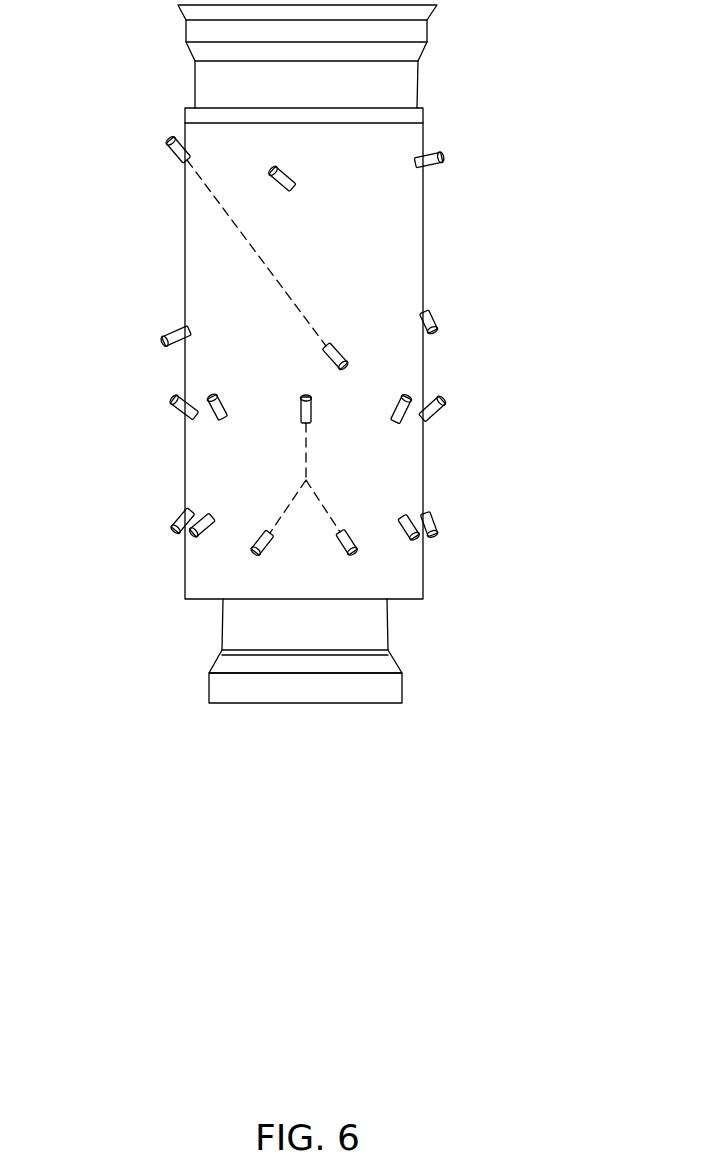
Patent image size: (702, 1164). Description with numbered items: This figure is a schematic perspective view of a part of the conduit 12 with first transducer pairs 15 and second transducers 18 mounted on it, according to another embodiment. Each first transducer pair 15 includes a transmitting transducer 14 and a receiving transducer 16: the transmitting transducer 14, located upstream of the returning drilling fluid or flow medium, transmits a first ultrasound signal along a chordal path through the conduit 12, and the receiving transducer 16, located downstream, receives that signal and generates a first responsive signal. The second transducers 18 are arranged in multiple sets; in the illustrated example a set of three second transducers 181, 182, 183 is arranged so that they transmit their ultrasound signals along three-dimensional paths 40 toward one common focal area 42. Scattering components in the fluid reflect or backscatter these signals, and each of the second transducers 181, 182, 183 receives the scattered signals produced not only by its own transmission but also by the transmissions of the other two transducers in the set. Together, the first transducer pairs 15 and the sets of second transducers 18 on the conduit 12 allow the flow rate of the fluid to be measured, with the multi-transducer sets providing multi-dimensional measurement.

The conduit 12 is at (408, 232).
The transmitting transducer 14 is at (347, 368).
The first transducer pair 15 is at (178, 128).
The receiving transducer 16 is at (170, 140).
The second transducers 18 is at (434, 524).
The second transducer 181 is at (300, 400).
The second transducer 182 is at (350, 553).
The second transducer 183 is at (262, 553).
The three-dimensional paths 40 is at (302, 448).
The focal area 42 is at (305, 480).